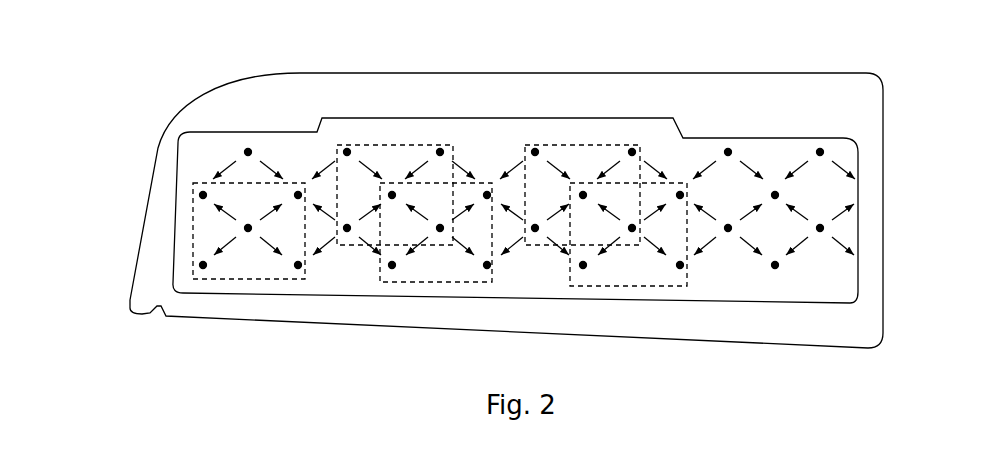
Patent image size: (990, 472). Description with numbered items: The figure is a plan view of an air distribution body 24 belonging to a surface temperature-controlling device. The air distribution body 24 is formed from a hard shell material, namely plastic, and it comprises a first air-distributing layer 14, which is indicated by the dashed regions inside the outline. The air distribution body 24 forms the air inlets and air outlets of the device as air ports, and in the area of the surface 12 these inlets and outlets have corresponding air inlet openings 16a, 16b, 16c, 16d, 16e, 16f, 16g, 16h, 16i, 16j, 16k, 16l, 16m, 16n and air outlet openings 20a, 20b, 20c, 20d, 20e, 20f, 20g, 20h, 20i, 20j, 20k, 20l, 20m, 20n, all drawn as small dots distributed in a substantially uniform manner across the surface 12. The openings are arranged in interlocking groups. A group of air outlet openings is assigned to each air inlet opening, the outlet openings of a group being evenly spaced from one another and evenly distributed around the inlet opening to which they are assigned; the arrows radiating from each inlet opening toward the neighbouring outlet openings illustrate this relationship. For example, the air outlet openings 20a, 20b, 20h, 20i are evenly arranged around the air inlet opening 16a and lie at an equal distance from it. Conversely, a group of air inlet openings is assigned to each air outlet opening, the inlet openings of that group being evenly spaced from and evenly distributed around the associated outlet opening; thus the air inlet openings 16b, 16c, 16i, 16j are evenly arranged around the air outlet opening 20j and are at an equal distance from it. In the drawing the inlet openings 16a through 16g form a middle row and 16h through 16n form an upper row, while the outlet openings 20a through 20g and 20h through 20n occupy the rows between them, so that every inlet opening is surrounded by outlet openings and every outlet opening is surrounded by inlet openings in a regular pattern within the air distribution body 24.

The surface 12 is at (812, 194).
The first air-distributing layer 14 is at (197, 228).
The air distribution body 24 is at (172, 150).
The air inlet opening 16a is at (248, 231).
The air inlet opening 16b is at (347, 231).
The air inlet opening 16c is at (440, 231).
The air inlet opening 16d is at (535, 231).
The air inlet opening 16e is at (632, 231).
The air inlet opening 16f is at (728, 232).
The air inlet opening 16g is at (820, 232).
The air inlet opening 16h is at (248, 150).
The air inlet opening 16i is at (347, 150).
The air inlet opening 16j is at (440, 150).
The air inlet opening 16k is at (535, 150).
The air inlet opening 16l is at (632, 150).
The air inlet opening 16m is at (728, 150).
The air inlet opening 16n is at (820, 150).
The air outlet opening 20a is at (203, 268).
The air outlet opening 20b is at (298, 268).
The air outlet opening 20c is at (392, 268).
The air outlet opening 20d is at (487, 268).
The air outlet opening 20e is at (583, 268).
The air outlet opening 20f is at (680, 268).
The air outlet opening 20g is at (775, 268).
The air outlet opening 20h is at (203, 192).
The air outlet opening 20i is at (298, 192).
The air outlet opening 20j is at (392, 192).
The air outlet opening 20k is at (487, 192).
The air outlet opening 20l is at (583, 192).
The air outlet opening 20m is at (680, 192).
The air outlet opening 20n is at (775, 192).